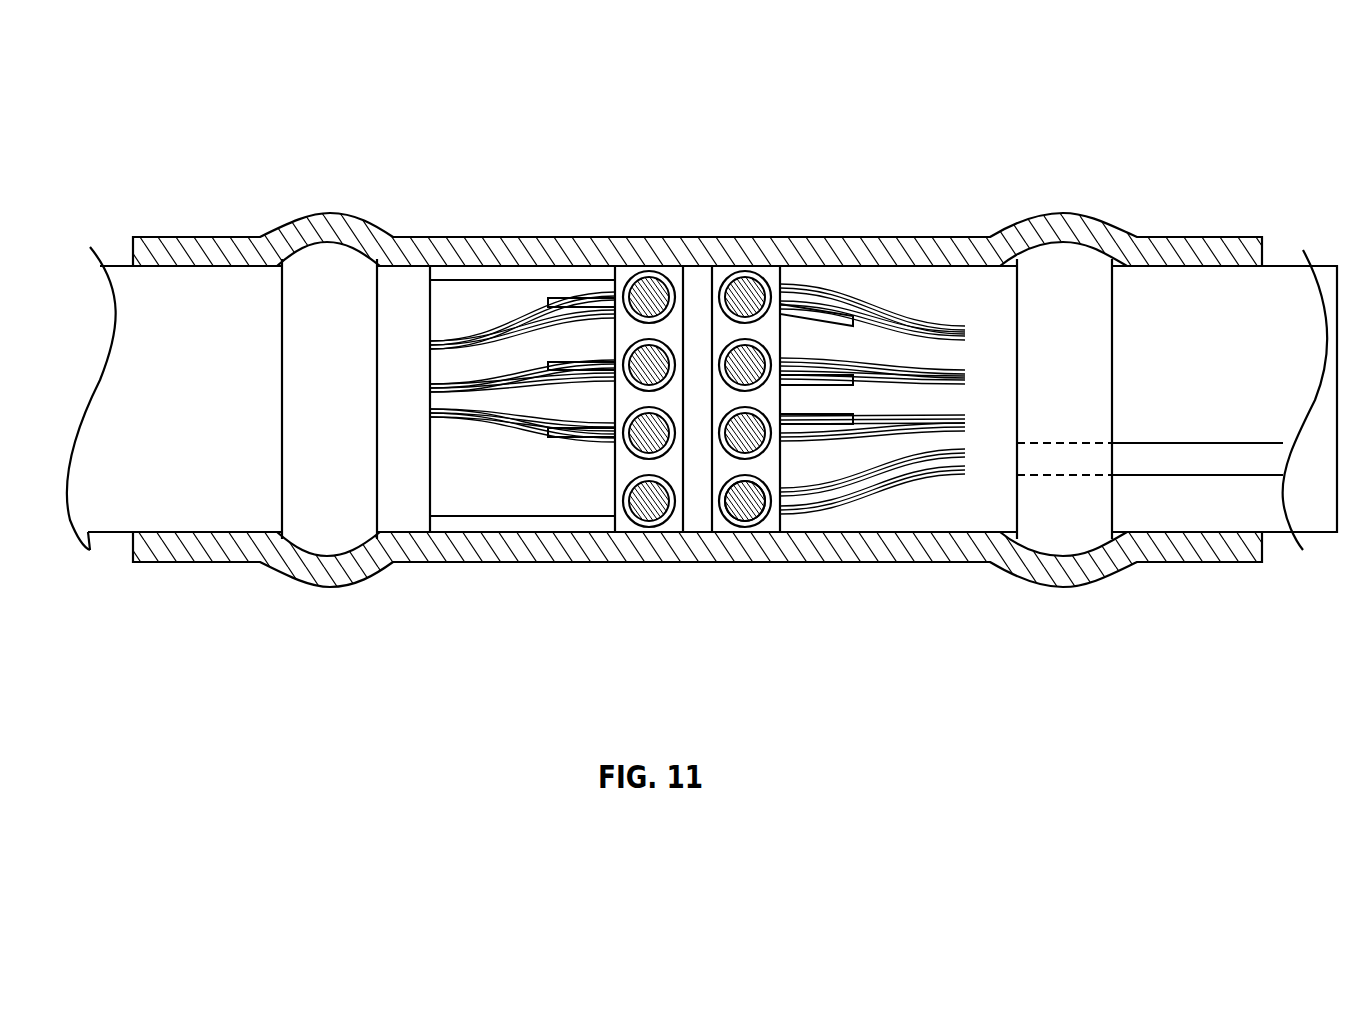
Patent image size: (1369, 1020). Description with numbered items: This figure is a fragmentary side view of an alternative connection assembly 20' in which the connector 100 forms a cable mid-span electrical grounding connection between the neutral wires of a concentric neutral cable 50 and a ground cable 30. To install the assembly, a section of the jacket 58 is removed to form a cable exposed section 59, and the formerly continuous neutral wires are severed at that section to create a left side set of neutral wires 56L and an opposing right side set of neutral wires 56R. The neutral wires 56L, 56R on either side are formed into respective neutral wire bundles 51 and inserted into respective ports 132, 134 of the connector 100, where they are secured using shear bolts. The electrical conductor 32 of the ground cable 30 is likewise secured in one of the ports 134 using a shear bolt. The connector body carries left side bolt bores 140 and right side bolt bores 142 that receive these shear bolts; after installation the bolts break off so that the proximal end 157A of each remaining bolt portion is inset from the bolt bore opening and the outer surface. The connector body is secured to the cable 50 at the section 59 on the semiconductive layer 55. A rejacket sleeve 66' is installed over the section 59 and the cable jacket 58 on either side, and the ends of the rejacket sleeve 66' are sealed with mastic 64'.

The connection assembly 20' is at (687, 155).
The ground cable 30 is at (879, 393).
The electrical conductor 32 is at (863, 517).
The cable 50 is at (105, 540).
The neutral wire bundles 51 is at (876, 282).
The semiconductive layer 55 is at (450, 300).
The left side set of neutral wires 56L is at (500, 328).
The right side set of neutral wires 56R is at (555, 320).
The jacket 58 is at (166, 300).
The cable exposed section 59 is at (707, 596).
The mastic 64' is at (751, 447).
The rejacket sleeve 66' is at (697, 377).
The connector 100 is at (754, 263).
The first terminal opening 132 is at (603, 281).
The second terminal opening 134 is at (788, 284).
The first bolt bores 140 is at (628, 516).
The second bolt bores 142 is at (726, 497).
The proximal end 157A is at (745, 512).